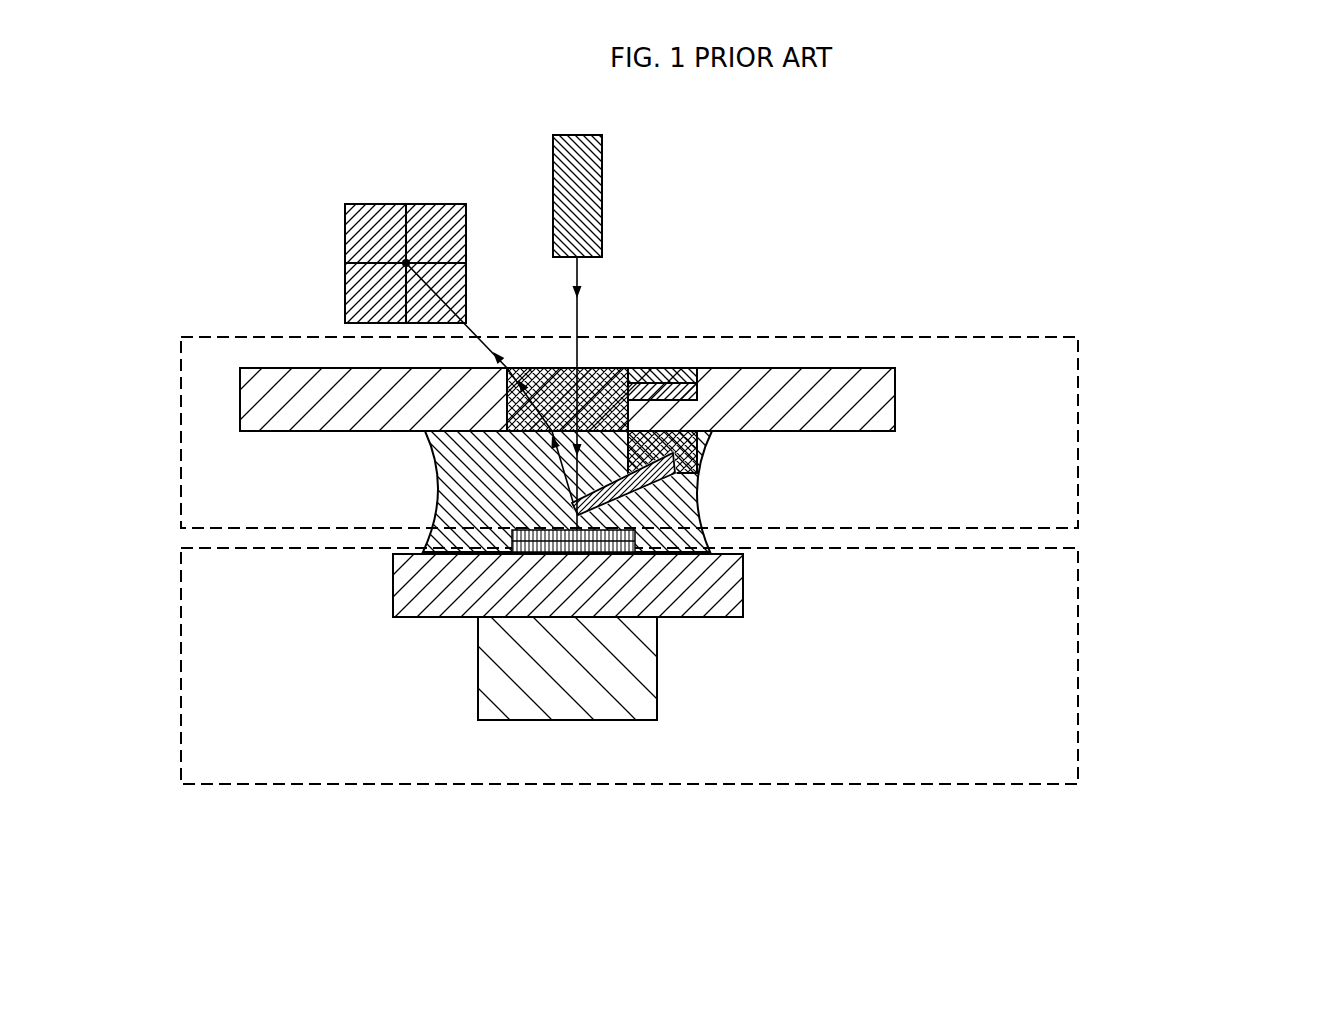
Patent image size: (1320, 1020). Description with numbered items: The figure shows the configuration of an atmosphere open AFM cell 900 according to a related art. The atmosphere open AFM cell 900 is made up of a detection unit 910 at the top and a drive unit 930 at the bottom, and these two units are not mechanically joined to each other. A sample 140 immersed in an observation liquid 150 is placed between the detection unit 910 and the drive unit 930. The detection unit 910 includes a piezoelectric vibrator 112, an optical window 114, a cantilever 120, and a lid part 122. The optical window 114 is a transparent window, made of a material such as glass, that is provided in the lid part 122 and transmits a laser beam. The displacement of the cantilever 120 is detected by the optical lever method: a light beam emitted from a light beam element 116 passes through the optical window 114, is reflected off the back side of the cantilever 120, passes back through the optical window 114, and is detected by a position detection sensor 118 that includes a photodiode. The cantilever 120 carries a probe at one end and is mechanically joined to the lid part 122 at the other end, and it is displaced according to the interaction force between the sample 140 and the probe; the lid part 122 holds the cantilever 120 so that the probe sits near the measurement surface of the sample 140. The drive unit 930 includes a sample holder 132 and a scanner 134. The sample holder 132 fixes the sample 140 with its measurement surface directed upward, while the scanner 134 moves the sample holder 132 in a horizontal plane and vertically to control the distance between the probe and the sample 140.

The piezoelectric vibrator 112 is at (690, 392).
The optical window 114 is at (610, 368).
The light beam element 116 is at (604, 150).
The position detection sensor 118 is at (435, 205).
The cantilever 120 is at (615, 497).
The lid part 122 is at (853, 418).
The sample holder 132 is at (723, 585).
The scanner 134 is at (618, 710).
The sample 140 is at (510, 540).
The observation liquid 150 is at (452, 463).
The atmosphere open AFM cell 900 is at (1160, 450).
The detection unit 910 is at (1072, 338).
The drive unit 930 is at (1080, 567).